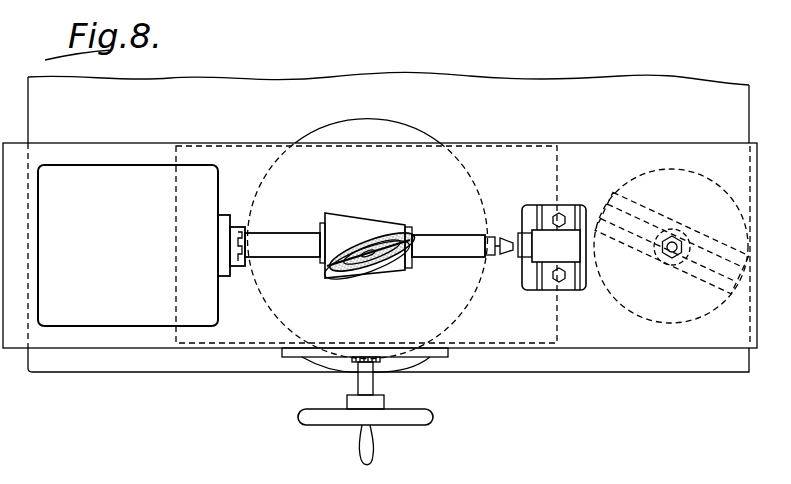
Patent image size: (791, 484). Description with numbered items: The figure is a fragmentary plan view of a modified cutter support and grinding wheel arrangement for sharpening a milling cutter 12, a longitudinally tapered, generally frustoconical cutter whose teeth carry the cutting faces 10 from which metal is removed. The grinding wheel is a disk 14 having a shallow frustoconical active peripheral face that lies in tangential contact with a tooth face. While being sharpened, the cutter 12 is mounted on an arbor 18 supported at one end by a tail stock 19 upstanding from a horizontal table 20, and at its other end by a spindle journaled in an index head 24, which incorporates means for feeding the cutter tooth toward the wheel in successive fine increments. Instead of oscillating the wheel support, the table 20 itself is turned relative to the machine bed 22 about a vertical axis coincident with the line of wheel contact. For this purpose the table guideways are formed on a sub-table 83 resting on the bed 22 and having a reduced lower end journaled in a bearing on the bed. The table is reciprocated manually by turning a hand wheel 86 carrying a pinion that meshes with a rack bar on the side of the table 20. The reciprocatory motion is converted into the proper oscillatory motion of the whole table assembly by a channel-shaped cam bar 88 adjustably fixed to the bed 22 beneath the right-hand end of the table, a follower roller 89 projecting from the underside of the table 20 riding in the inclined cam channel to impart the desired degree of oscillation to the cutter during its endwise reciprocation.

The cutting face 10 is at (399, 238).
The milling cutter 12 is at (398, 268).
The disk 14 is at (342, 275).
The arbor 18 is at (285, 240).
The tail stock 19 is at (570, 240).
The table 20 is at (626, 338).
The machine bed 22 is at (70, 365).
The index head 24 is at (130, 181).
The sub-table 83 is at (177, 148).
The hand wheel 86 is at (434, 416).
The cam bar 88 is at (728, 232).
The follower roller 89 is at (691, 265).